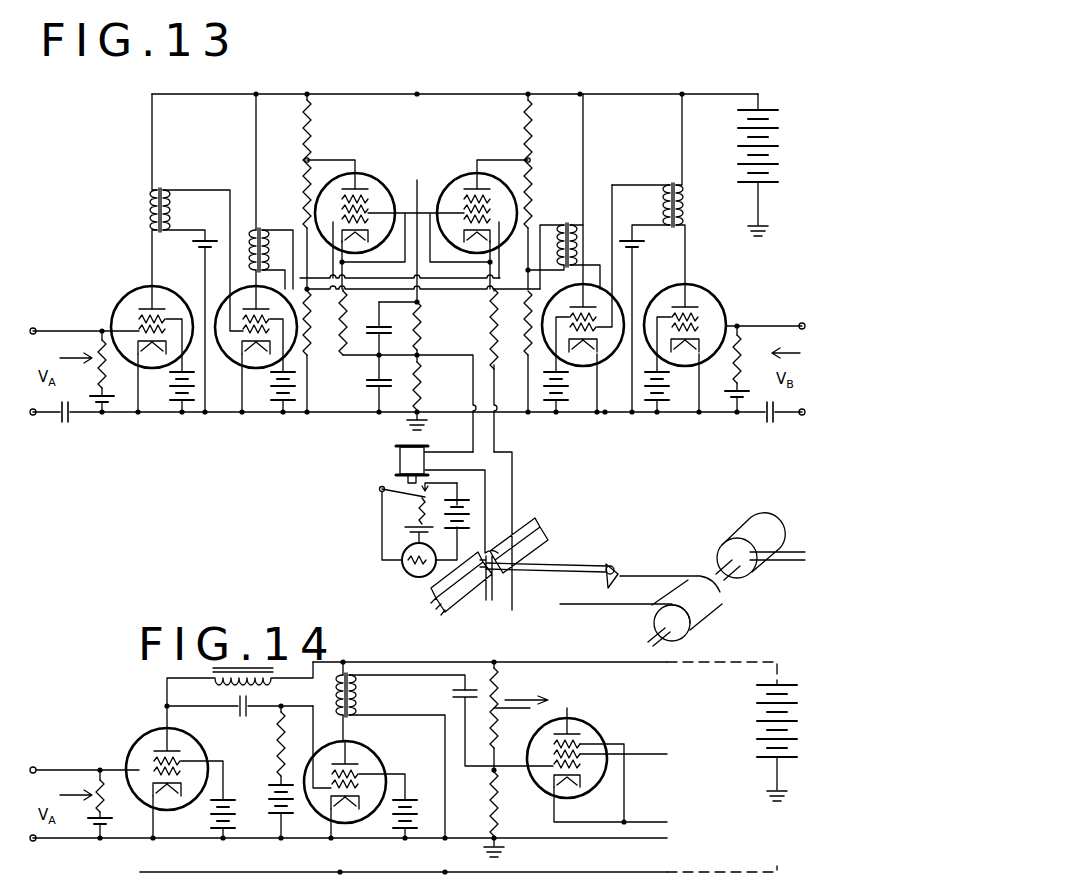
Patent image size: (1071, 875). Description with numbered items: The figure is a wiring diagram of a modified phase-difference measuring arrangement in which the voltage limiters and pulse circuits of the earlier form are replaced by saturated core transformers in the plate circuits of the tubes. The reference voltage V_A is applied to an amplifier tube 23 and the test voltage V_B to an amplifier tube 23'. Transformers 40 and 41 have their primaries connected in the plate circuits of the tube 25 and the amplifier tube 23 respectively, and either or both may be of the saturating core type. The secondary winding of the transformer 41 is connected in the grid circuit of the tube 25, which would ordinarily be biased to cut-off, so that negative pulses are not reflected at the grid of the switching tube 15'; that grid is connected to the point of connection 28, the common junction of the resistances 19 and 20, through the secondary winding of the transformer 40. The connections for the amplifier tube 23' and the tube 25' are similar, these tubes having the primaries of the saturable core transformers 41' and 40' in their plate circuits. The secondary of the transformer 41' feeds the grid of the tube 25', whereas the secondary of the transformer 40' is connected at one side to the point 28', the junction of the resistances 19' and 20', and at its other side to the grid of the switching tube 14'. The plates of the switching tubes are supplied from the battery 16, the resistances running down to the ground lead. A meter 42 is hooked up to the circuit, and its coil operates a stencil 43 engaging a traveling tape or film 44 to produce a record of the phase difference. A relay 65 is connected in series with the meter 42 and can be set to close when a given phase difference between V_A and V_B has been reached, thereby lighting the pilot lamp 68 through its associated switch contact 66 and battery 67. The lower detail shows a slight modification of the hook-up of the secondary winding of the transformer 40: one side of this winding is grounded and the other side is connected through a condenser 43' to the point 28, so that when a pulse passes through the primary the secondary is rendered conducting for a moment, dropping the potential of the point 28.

In FIG. 13, the switching tube 14' is at (385, 219).
In FIG. 13, the switching tube 15' is at (479, 219).
In FIG. 14, the switching tube 15' is at (597, 765).
In FIG. 13, the battery 16 is at (745, 155).
In FIG. 14, the battery 16 is at (770, 704).
In FIG. 13, the resistance 19 is at (289, 191).
In FIG. 14, the resistance 19 is at (520, 716).
In FIG. 13, the resistance 19' is at (543, 191).
In FIG. 13, the resistance 20 is at (329, 339).
In FIG. 14, the resistance 20 is at (507, 814).
In FIG. 13, the resistance 20' is at (516, 351).
In FIG. 13, the amplifier tube 23 is at (139, 349).
In FIG. 14, the amplifier tube 23 is at (219, 750).
In FIG. 13, the amplifier tube 23' is at (700, 348).
In FIG. 13, the tube 25 is at (256, 349).
In FIG. 14, the tube 25 is at (360, 772).
In FIG. 13, the tube 25' is at (583, 253).
In FIG. 13, the point of connection 28 is at (318, 351).
In FIG. 14, the point of connection 28 is at (477, 788).
In FIG. 13, the point of connection 28' is at (506, 329).
In FIG. 13, the transformer 40 is at (271, 191).
In FIG. 14, the transformer 40 is at (400, 750).
In FIG. 13, the saturable core transformer 40' is at (564, 234).
In FIG. 13, the transformer 41 is at (196, 253).
In FIG. 13, the saturable core transformer 41' is at (648, 253).
In FIG. 13, the meter 42 is at (500, 578).
In FIG. 13, the stencil 43 is at (572, 563).
In FIG. 14, the condenser 43' is at (374, 695).
In FIG. 13, the traveling tape or film 44 is at (690, 626).
In FIG. 13, the relay 65 is at (398, 458).
In FIG. 13, the switch armature 66 is at (418, 510).
In FIG. 13, the battery 67 is at (470, 528).
In FIG. 13, the pilot lamp 68 is at (414, 578).